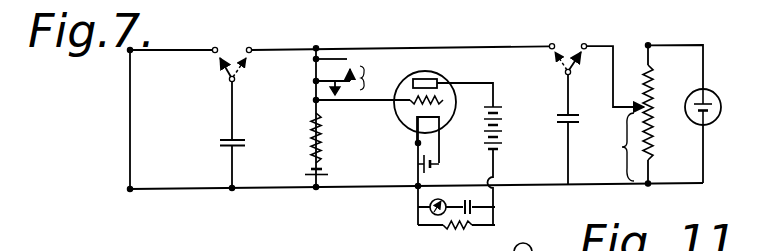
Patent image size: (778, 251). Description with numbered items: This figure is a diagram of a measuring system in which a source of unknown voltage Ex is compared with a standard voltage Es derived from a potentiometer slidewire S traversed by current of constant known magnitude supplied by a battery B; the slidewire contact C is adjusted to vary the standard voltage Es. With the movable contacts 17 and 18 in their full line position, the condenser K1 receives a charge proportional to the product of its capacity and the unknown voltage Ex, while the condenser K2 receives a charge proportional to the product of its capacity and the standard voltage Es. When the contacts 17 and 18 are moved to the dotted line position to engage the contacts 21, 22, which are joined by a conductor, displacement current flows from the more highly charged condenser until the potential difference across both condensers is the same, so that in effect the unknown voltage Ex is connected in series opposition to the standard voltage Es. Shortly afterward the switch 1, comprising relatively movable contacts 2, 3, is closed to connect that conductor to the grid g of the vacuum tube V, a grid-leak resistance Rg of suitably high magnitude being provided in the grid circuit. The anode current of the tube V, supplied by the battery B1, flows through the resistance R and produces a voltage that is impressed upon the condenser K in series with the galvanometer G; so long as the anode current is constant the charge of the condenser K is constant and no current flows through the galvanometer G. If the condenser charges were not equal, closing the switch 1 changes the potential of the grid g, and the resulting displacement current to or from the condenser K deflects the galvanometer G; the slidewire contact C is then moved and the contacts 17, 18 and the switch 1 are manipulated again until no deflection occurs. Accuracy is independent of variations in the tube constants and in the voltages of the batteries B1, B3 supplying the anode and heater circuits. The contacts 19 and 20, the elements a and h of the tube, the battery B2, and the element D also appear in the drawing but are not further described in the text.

In FIG. 7, the source of unknown voltage Ex is at (123, 119).
In FIG. 7, the switch contact 19 is at (216, 46).
In FIG. 7, the contact 21 is at (250, 46).
In FIG. 7, the movable contact 17 is at (220, 74).
In FIG. 7, the condenser K1 is at (246, 120).
In FIG. 7, the contact 3 is at (347, 59).
In FIG. 7, the contact 2 is at (350, 84).
In FIG. 7, the switch 1 is at (363, 77).
In FIG. 7, the grid-leak resistance Rg is at (321, 129).
In FIG. 7, the grid bias battery B2 is at (304, 175).
In FIG. 7, the grid g is at (404, 115).
In FIG. 7, the vacuum tube V is at (444, 78).
In FIG. 7, the anode a is at (421, 79).
In FIG. 7, the cathode heater h is at (440, 120).
In FIG. 7, the battery B3 is at (433, 168).
In FIG. 7, the battery B1 is at (503, 136).
In FIG. 7, the condenser K is at (496, 209).
In FIG. 7, the galvanometer G is at (418, 216).
In FIG. 7, the resistance R is at (459, 228).
In FIG. 7, the contact 22 is at (554, 42).
In FIG. 7, the switch contact 20 is at (585, 42).
In FIG. 7, the movable contact 18 is at (571, 70).
In FIG. 7, the condenser K2 is at (566, 114).
In FIG. 7, the potentiometer slidewire S is at (653, 84).
In FIG. 7, the slidewire contact C is at (638, 106).
In FIG. 7, the standard voltage Es is at (612, 147).
In FIG. 7, the battery B is at (722, 107).
In FIG. 11, the detector D is at (531, 246).